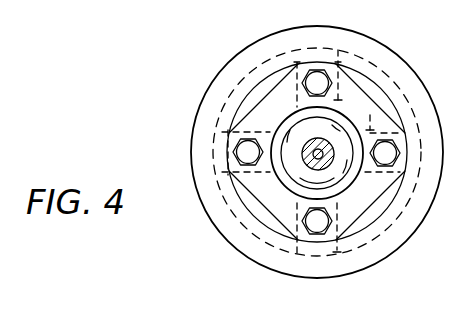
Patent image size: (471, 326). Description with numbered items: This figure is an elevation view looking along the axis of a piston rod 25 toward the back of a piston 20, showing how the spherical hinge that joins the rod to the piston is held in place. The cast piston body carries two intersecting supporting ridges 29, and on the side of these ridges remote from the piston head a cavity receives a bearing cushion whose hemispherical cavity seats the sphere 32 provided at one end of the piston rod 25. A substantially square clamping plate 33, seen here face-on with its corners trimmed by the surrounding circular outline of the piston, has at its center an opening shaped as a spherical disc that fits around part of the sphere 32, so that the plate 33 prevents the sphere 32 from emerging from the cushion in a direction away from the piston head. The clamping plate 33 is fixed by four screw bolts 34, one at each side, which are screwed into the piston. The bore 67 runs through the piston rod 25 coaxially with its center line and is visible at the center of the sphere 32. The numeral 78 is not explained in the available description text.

The piston 20 is at (363, 33).
The piston rod 25 is at (333, 138).
The supporting ridges 29 is at (232, 148).
The sphere 32 is at (305, 177).
The clamping plate 33 is at (252, 118).
The screw bolts 34 is at (315, 75).
The bore 67 is at (303, 158).
The element 78 is at (157, 0).